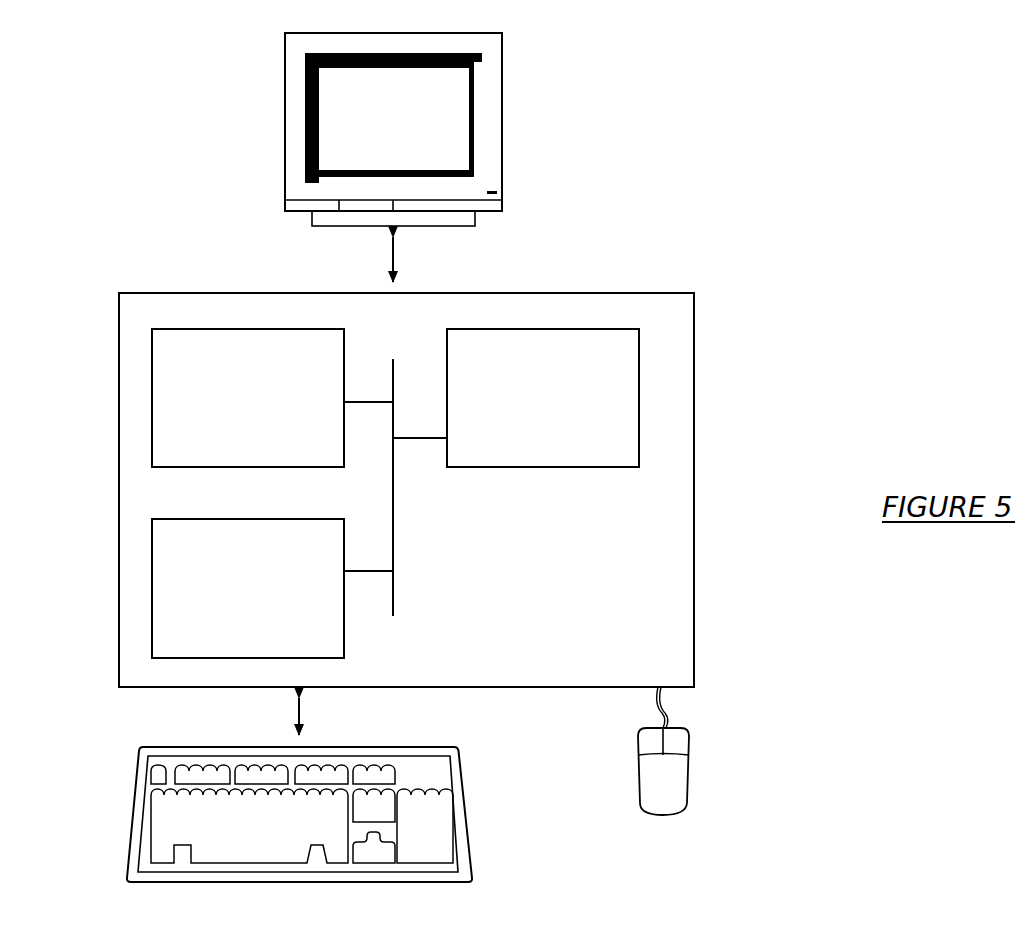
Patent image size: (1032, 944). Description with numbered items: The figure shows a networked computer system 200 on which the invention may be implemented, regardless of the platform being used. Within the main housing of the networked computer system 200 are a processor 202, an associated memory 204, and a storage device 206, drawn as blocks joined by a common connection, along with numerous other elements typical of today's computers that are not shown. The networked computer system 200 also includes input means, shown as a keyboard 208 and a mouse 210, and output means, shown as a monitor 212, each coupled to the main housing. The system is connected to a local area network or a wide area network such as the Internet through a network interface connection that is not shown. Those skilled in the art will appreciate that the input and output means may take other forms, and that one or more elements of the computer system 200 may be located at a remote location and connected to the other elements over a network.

The networked computer system 200 is at (712, 165).
The processor 202 is at (539, 410).
The memory 204 is at (231, 409).
The storage device 206 is at (228, 600).
The keyboard 208 is at (225, 848).
The mouse 210 is at (682, 792).
The monitor 212 is at (375, 133).